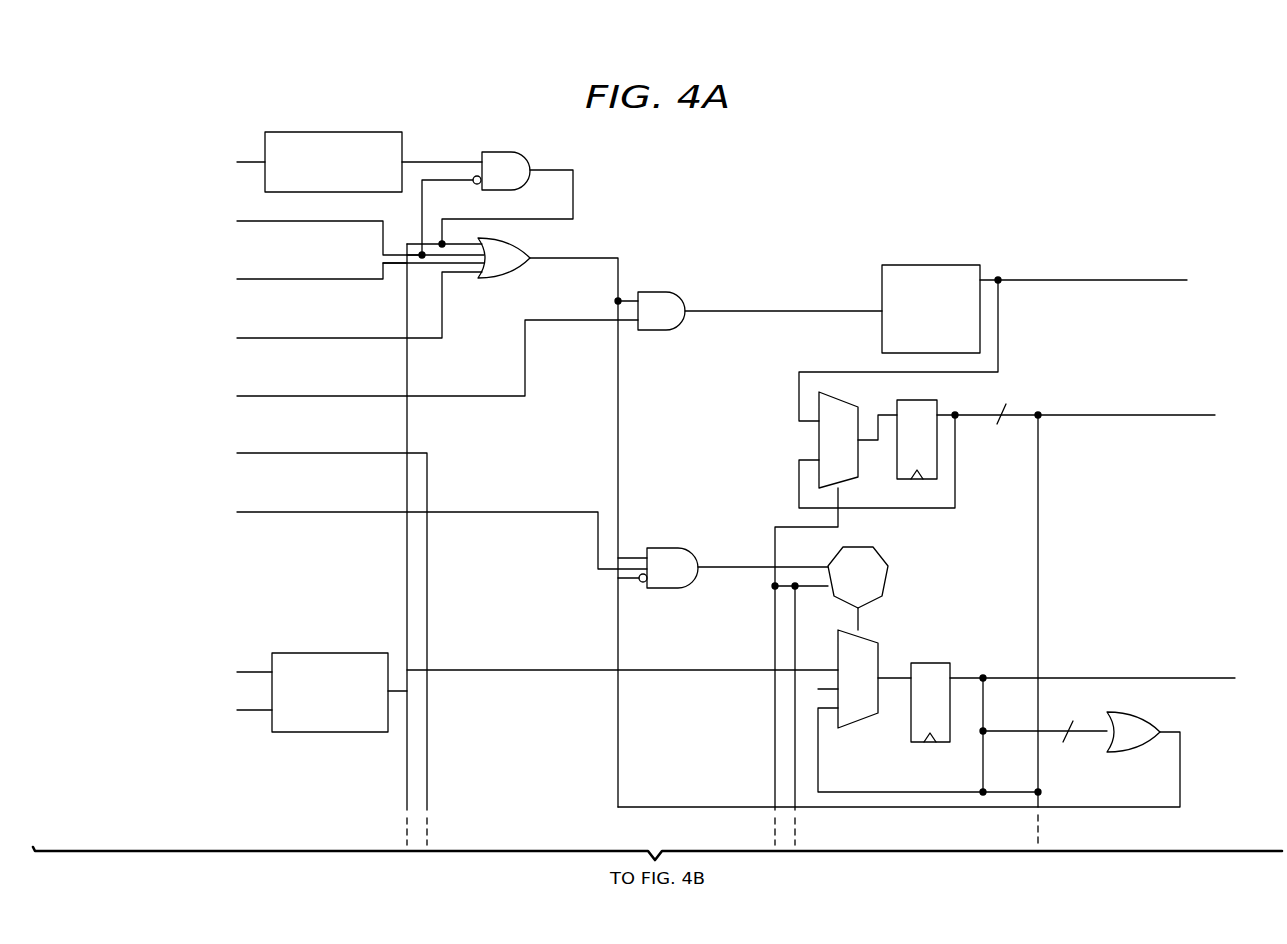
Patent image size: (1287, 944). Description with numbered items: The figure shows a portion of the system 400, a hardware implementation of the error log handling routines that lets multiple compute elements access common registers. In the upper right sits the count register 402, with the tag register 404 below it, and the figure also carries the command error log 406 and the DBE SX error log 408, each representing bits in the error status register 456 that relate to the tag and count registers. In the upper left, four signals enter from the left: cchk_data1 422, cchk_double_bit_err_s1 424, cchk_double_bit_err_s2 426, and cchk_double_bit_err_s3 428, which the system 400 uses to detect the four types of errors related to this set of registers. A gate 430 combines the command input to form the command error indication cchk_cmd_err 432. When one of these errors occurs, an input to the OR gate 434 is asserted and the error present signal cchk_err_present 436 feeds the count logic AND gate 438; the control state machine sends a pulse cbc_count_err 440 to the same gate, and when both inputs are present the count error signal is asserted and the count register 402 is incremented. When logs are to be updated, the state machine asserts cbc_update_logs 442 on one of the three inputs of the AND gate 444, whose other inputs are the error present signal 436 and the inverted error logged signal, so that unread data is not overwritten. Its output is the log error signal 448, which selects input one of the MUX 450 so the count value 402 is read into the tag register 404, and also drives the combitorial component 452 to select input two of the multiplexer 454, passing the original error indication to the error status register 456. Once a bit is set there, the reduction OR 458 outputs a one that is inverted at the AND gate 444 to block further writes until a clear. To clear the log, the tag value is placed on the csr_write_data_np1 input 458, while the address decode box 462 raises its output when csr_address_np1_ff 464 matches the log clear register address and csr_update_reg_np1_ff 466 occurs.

The system 400 is at (999, 183).
The count register (count_ff) 402 is at (1166, 278).
The tag register (err_tag_ff) 404 is at (1195, 412).
The command error log (cmd_err_logged) 406 is at (1142, 629).
The DBE SX error log (dbe_sx_logged) 408 is at (1222, 663).
The cchk_data1 [xcsr_cmd] signal 422 is at (254, 160).
The cchk_double_bit_err_s1 signal 424 is at (313, 228).
The cchk_double_bit_err_s2 signal 426 is at (313, 285).
The cchk_double_bit_err_s3 signal 428 is at (313, 344).
The AND gate 430 is at (500, 150).
The cchk_cmd_err signal 432 is at (549, 170).
The OR gate 434 is at (530, 262).
The cchk_err_present signal 436 is at (606, 232).
The count logic AND gate 438 is at (652, 333).
The cbc_count_err signal 440 is at (313, 402).
The cbc_update_logs signal 442 is at (313, 517).
The AND gate 444 is at (662, 546).
The log error (log_err) signal 448 is at (725, 580).
The MUX 450 is at (817, 441).
The combitorial component 452 is at (888, 566).
The multiplexer 454 is at (860, 725).
The error status register 456 is at (929, 660).
The reduction OR 458 is at (313, 459).
The address decode box 462 is at (330, 652).
The csr_address_np1_ff signal 464 is at (256, 672).
The csr_update_reg_np1_ff signal 466 is at (258, 715).